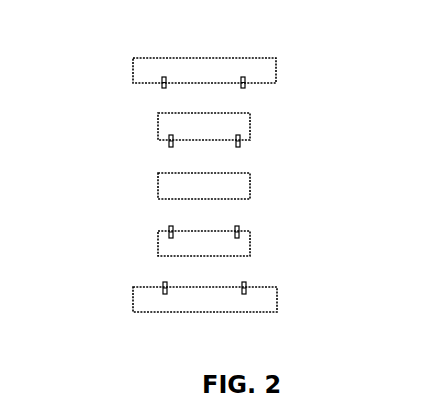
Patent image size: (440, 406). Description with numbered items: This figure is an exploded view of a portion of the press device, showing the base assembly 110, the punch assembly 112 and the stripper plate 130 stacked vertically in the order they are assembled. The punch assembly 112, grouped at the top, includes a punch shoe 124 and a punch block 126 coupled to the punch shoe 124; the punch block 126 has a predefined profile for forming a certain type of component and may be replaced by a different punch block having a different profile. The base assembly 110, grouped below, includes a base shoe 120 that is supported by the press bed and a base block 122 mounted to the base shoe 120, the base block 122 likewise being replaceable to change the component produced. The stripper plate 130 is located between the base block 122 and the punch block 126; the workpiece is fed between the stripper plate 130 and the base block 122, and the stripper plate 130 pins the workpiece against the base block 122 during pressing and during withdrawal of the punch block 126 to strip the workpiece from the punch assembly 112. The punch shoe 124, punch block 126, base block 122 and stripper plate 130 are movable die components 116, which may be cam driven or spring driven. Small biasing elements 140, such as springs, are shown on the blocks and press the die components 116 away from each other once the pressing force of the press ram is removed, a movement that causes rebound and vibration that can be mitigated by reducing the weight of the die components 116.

The movable die components 116 is at (107, 52).
The punch shoe 124 is at (276, 70).
The punch block 126 is at (250, 127).
The biasing elements 140 is at (241, 143).
The stripper plate 130 is at (250, 186).
The base block 122 is at (250, 243).
The base shoe 120 is at (277, 300).
The punch assembly 112 is at (360, 57).
The base assembly 110 is at (360, 188).